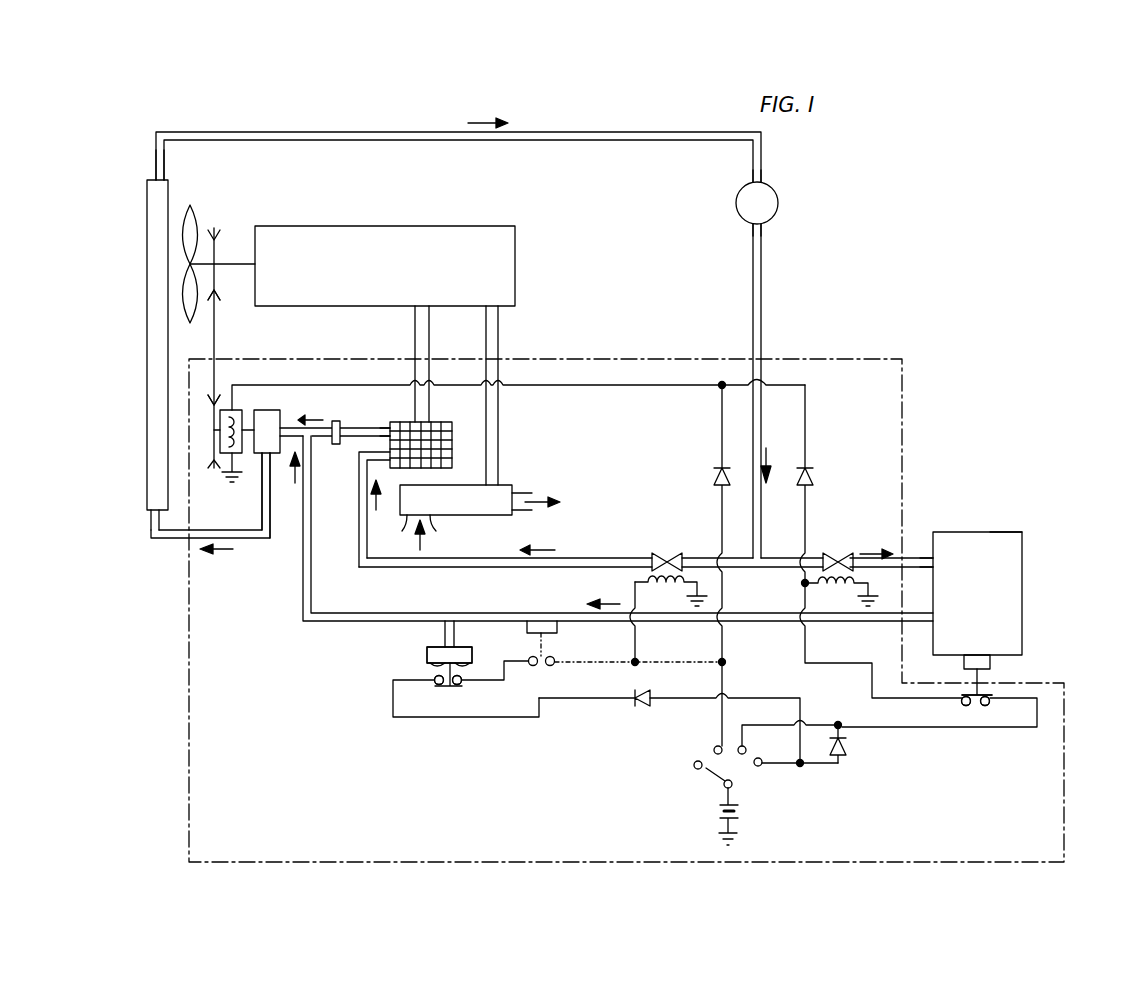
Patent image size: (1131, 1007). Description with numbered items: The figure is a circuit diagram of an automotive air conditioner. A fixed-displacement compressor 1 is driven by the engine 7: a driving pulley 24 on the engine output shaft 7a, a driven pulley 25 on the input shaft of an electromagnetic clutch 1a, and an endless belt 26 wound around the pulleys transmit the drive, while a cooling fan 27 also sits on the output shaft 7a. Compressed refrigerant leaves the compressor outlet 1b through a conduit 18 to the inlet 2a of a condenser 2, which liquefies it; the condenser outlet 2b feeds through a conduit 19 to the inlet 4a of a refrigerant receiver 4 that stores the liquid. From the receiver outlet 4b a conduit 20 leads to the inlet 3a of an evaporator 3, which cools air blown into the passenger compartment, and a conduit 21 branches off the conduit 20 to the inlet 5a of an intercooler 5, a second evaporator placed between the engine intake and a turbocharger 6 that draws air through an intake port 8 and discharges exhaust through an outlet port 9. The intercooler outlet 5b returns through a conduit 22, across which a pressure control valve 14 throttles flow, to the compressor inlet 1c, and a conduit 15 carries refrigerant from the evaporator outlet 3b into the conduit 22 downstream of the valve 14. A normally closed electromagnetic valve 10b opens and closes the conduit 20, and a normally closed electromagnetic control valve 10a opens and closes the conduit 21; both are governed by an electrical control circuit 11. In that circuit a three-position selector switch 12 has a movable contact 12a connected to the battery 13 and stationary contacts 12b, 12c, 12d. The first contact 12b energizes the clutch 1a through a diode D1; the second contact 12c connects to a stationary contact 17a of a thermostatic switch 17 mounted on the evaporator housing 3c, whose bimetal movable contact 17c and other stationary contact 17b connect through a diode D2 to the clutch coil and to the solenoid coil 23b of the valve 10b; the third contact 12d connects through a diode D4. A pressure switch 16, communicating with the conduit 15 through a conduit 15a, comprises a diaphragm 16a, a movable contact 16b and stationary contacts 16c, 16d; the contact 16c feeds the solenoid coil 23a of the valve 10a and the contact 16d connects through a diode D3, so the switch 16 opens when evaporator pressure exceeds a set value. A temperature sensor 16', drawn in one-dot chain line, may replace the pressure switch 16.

The compressor 1 is at (266, 410).
The electromagnetic clutch 1a is at (228, 410).
The outlet 1b is at (272, 470).
The inlet 1c is at (288, 426).
The condenser 2 is at (145, 468).
The inlet 2a is at (150, 515).
The outlet 2b is at (152, 178).
The evaporator 3 is at (967, 528).
The inlet 3a is at (932, 556).
The outlet 3b is at (933, 630).
The housing 3c is at (998, 530).
The refrigerant receiver 4 is at (780, 205).
The inlet 4a is at (765, 185).
The outlet 4b is at (765, 228).
The intercooler 5 is at (438, 425).
The inlet 5a is at (378, 480).
The outlet 5b is at (388, 433).
The turbocharger 6 is at (498, 485).
The engine 7 is at (495, 222).
The output shaft 7a is at (228, 262).
The intake port 8 is at (432, 522).
The outlet port 9 is at (525, 508).
The electromagnetic control valve 10a is at (667, 550).
The electromagnetic valve 10b is at (840, 550).
The electrical control circuit 11 is at (912, 428).
The selector switch 12 is at (712, 790).
The movable contact 12a is at (708, 780).
The first stationary contact 12b is at (718, 745).
The second stationary contact 12c is at (740, 748).
The third stationary contact 12d is at (758, 768).
The battery 13 is at (745, 815).
The pressure control valve 14 is at (336, 450).
The conduit 15 is at (300, 628).
The conduit 15a is at (443, 632).
The pressure switch 16 is at (389, 683).
The diaphragm 16a is at (425, 658).
The movable contact 16b is at (452, 686).
The stationary contact 16c is at (462, 678).
The stationary contact 16d is at (432, 680).
The temperature sensor 16' is at (626, 643).
The thermostatic switch 17 is at (1000, 698).
The stationary contact 17a is at (985, 708).
The stationary contact 17b is at (962, 708).
The movable contact 17c is at (985, 695).
The conduit 18 is at (165, 540).
The conduit 19 is at (458, 142).
The conduit 20 is at (762, 304).
The conduit 21 is at (503, 566).
The conduit 22 is at (305, 425).
The solenoid coil 23a is at (665, 588).
The solenoid coil 23b is at (835, 590).
The driving pulley 24 is at (218, 236).
The driven pulley 25 is at (212, 413).
The endless belt 26 is at (210, 326).
The cooling fan 27 is at (200, 215).
The diode D1 is at (715, 484).
The diode D2 is at (815, 483).
The diode D3 is at (640, 706).
The diode D4 is at (845, 740).